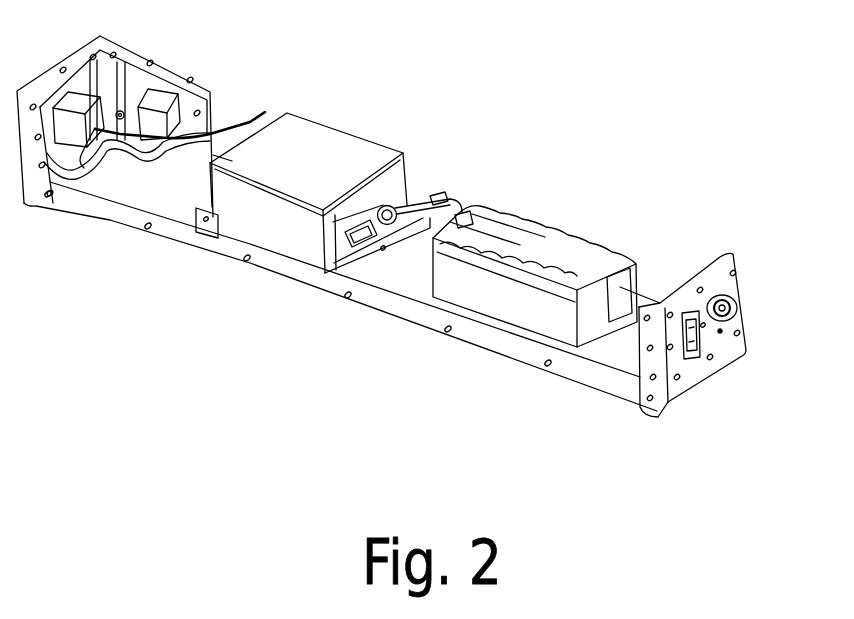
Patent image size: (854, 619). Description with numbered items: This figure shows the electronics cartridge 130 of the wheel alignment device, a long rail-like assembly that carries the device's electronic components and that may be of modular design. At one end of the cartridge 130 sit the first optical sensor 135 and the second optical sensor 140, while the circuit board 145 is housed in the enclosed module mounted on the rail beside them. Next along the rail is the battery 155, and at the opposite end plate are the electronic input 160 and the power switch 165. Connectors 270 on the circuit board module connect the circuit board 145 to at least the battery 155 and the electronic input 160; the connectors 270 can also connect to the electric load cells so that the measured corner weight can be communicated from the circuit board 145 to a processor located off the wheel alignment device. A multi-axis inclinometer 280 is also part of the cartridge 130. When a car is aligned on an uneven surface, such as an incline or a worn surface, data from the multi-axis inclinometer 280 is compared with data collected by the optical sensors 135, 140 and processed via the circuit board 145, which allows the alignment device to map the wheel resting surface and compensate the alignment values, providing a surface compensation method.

The electronics cartridge 130 is at (513, 112).
The first optical sensor 135 is at (102, 127).
The second optical sensor 140 is at (124, 111).
The circuit board 145 is at (280, 217).
The battery 155 is at (500, 293).
The electronic input 160 is at (735, 303).
The power switch 165 is at (700, 346).
The connectors 270 is at (360, 225).
The multi-axis inclinometer 280 is at (265, 112).